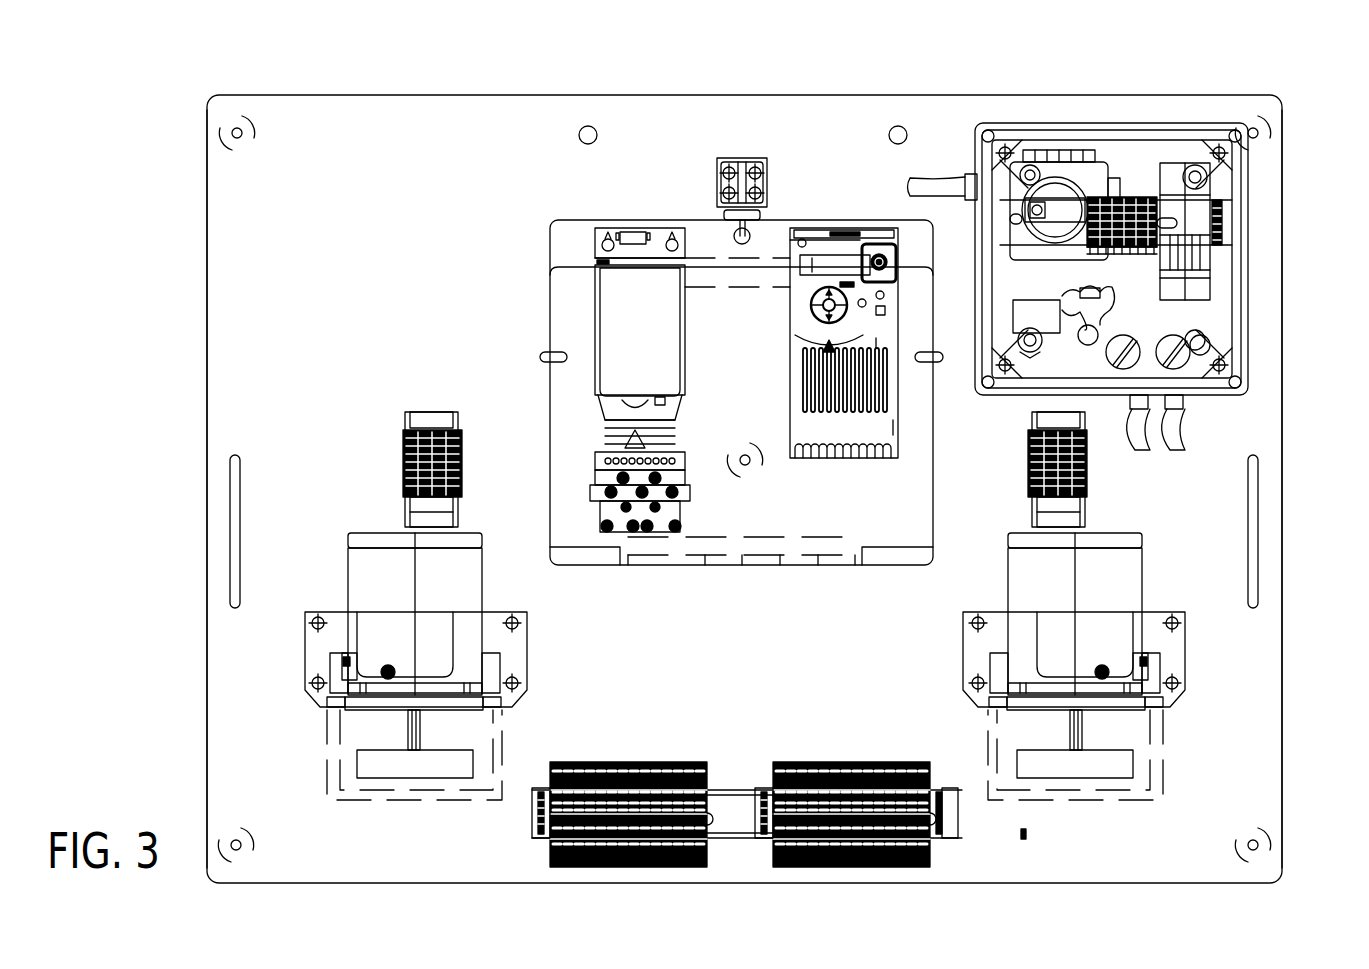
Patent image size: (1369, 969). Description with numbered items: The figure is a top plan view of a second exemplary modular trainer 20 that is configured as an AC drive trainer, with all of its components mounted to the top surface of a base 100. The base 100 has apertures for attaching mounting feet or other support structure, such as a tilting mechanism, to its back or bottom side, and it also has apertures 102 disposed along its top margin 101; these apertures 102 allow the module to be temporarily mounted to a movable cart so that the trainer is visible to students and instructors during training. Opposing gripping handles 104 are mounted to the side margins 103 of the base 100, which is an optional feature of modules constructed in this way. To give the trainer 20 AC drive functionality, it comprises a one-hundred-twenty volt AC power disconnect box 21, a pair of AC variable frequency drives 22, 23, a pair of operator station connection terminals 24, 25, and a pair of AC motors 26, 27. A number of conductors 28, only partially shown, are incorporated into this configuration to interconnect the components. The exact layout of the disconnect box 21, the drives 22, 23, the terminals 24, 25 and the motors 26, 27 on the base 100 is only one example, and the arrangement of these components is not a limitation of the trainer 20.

The AC drive trainer 20 is at (170, 396).
The base 100 is at (415, 125).
The top margin 101 is at (750, 118).
The apertures 102 is at (590, 127).
The side margins 103 is at (242, 262).
The gripping handles 104 is at (235, 538).
The AC power disconnect box 21 is at (1215, 312).
The AC variable frequency drive 22 is at (625, 310).
The AC variable frequency drive 23 is at (835, 242).
The operator station connection terminal 24 is at (648, 758).
The operator station connection terminal 25 is at (870, 758).
The AC motor 26 is at (382, 580).
The AC motor 27 is at (1120, 587).
The conductors 28 is at (1178, 428).